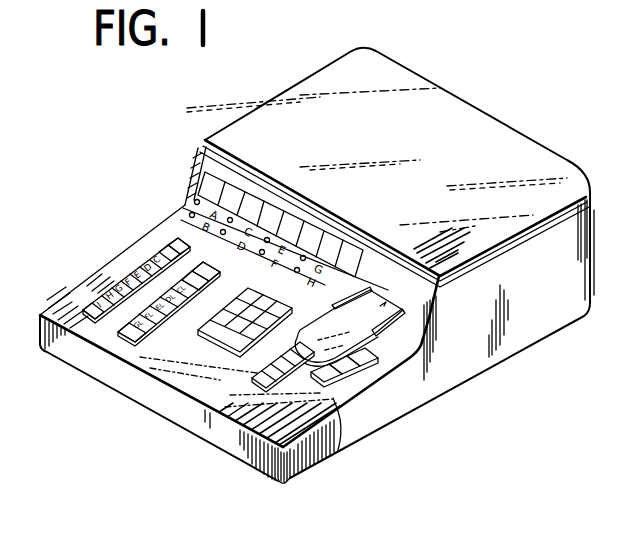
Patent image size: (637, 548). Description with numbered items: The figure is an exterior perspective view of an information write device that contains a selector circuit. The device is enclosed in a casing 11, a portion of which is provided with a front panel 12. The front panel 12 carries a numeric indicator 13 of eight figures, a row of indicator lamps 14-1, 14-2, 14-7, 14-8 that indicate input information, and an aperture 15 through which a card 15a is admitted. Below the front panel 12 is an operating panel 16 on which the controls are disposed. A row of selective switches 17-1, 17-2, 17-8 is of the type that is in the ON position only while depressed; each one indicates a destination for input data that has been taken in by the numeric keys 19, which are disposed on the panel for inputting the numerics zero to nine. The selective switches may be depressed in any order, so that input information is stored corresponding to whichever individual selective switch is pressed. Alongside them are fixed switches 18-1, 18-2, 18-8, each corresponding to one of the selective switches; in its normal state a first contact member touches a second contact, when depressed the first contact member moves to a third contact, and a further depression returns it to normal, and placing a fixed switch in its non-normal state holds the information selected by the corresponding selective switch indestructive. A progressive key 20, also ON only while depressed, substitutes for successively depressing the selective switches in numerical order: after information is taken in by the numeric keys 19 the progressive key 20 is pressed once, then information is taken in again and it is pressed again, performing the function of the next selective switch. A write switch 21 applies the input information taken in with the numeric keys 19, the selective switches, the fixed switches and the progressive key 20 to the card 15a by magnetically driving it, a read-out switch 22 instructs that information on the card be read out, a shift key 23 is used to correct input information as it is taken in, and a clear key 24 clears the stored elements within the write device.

The casing 11 is at (483, 125).
The front panel 12 is at (413, 298).
The numeric indicator 13 is at (277, 200).
The indicator lamp 14-1 is at (196, 201).
The indicator lamp 14-2 is at (191, 213).
The indicator lamp 14-7 is at (303, 256).
The indicator lamp 14-8 is at (299, 269).
The aperture 15 is at (425, 328).
The card 15a is at (367, 311).
The operating panel 16 is at (289, 452).
The selective switch 17-1 is at (170, 245).
The selective switch 17-2 is at (163, 250).
The selective switch 17-8 is at (83, 308).
The fixed switch 18-1 is at (223, 273).
The fixed switch 18-2 is at (216, 280).
The fixed switch 18-8 is at (140, 340).
The numeric keys 19 is at (210, 338).
The progressive key 20 is at (253, 382).
The write switch 21 is at (376, 368).
The read-out switch 22 is at (362, 385).
The shift key 23 is at (348, 395).
The clear key 24 is at (337, 432).